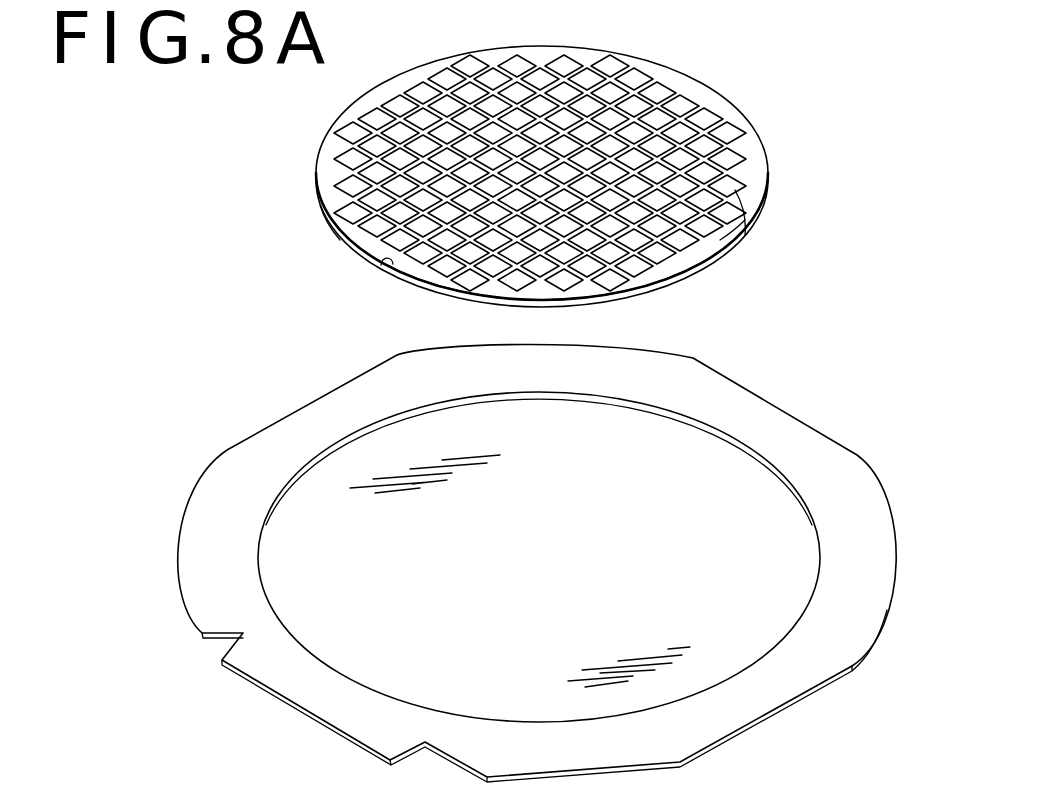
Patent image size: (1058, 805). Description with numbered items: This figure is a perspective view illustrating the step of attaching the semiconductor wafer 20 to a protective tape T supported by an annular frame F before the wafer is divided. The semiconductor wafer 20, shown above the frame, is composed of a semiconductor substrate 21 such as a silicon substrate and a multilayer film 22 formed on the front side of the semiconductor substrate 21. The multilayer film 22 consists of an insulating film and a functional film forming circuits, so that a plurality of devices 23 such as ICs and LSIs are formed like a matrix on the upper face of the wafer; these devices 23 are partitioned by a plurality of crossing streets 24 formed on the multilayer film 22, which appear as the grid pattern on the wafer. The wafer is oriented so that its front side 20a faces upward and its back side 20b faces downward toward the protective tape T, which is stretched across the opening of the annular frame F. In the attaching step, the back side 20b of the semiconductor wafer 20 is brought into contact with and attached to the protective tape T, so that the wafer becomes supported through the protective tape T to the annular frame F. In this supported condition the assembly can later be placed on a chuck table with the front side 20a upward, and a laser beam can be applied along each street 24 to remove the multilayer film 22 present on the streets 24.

The semiconductor wafer 20 is at (785, 154).
The front side of the semiconductor wafer 20a is at (708, 100).
The back side of the semiconductor wafer 20b is at (703, 273).
The semiconductor substrate 21 is at (399, 293).
The multilayer film 22 is at (732, 247).
The devices 23 is at (350, 152).
The streets 24 is at (337, 235).
The protective tape T is at (780, 513).
The annular frame F is at (858, 500).